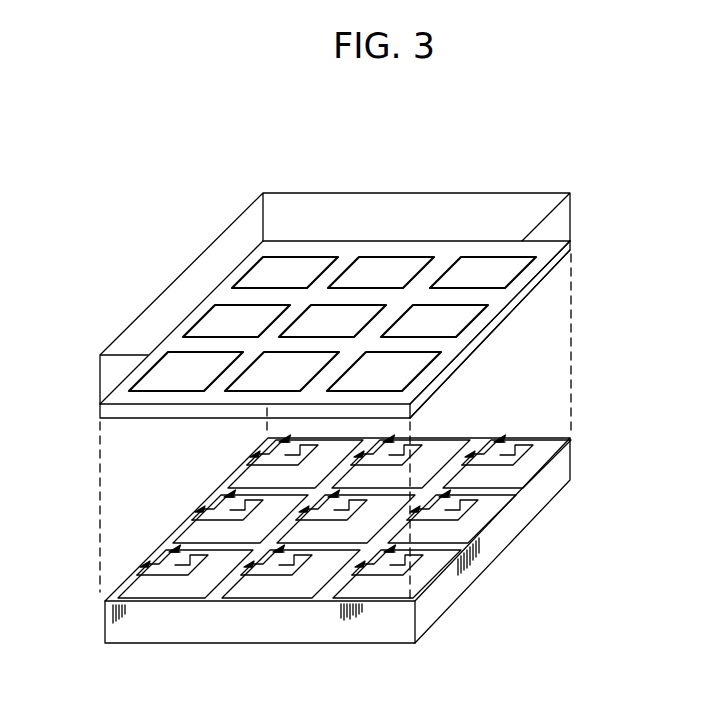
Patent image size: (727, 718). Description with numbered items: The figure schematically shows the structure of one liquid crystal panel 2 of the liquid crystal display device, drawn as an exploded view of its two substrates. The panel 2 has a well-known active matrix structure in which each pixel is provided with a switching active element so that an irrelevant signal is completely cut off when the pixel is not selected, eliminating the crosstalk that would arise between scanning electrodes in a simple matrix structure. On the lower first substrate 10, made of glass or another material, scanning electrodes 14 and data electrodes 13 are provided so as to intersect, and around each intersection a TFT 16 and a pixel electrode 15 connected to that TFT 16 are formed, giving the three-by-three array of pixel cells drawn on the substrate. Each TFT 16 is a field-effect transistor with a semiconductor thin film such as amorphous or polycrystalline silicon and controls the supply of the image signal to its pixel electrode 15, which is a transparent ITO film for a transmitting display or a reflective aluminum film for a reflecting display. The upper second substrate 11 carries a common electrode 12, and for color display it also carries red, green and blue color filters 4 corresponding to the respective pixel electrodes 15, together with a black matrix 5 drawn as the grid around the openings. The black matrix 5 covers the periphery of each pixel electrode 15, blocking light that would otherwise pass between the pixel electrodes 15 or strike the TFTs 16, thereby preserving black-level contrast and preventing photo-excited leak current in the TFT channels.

The liquid crystal panel 2 is at (339, 397).
The color filters 4 is at (309, 268).
The black matrix 5 is at (496, 238).
The first substrate 10 is at (332, 560).
The second substrate 11 is at (325, 366).
The common electrode 12 is at (527, 290).
The data electrodes 13 is at (450, 478).
The scanning electrodes 14 is at (370, 560).
The pixel electrodes 15 is at (428, 572).
The TFT 16 is at (377, 560).